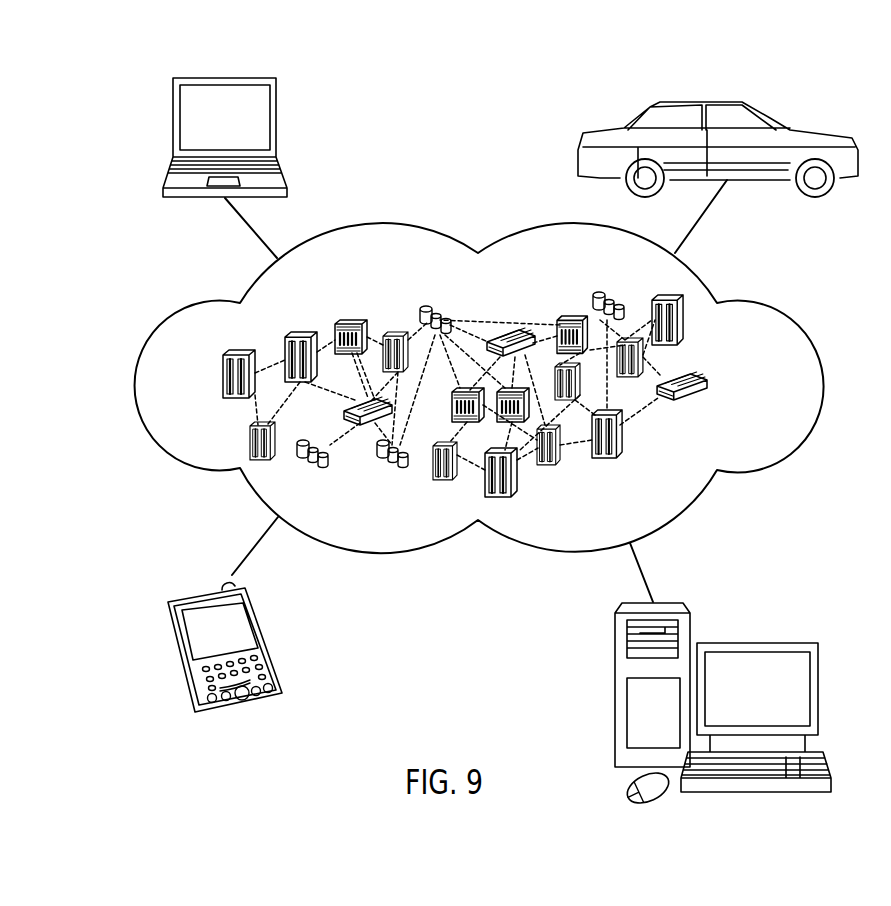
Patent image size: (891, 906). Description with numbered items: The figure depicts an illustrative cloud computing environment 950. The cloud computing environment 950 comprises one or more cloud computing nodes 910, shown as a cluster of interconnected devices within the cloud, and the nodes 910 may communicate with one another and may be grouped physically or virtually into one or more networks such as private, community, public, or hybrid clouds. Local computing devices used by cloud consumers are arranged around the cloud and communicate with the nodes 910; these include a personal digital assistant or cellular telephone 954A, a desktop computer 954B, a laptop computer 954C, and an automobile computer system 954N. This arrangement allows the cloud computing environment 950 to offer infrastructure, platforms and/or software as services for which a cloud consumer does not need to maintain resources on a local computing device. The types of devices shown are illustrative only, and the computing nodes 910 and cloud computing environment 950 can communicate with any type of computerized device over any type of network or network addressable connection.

The cloud computing environment 950 is at (768, 307).
The cloud computing node 910 is at (714, 385).
The personal digital assistant or cellular telephone 954A is at (207, 590).
The desktop computer 954B is at (758, 642).
The laptop computer 954C is at (222, 78).
The automobile computer system 954N is at (703, 100).